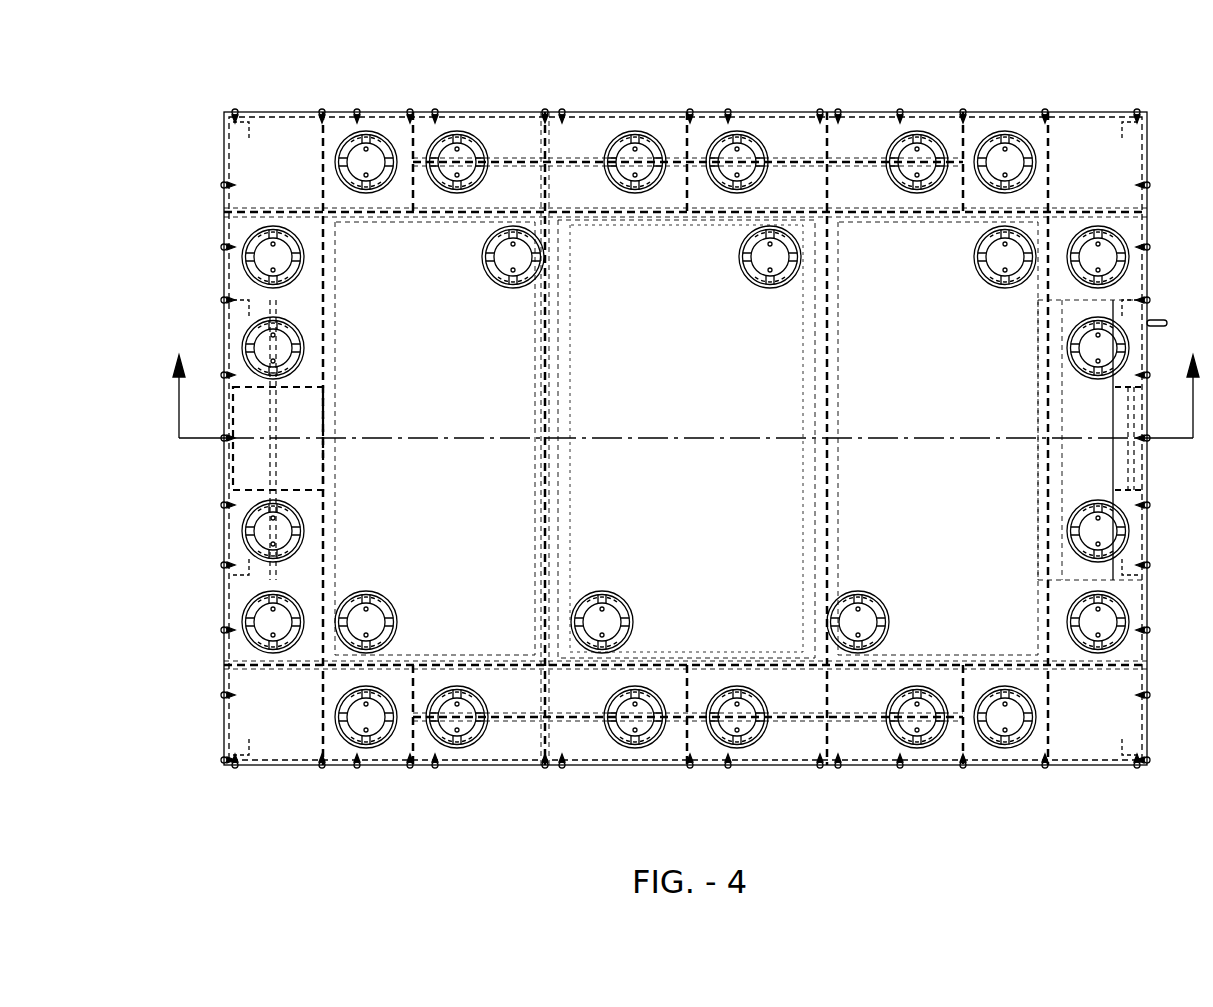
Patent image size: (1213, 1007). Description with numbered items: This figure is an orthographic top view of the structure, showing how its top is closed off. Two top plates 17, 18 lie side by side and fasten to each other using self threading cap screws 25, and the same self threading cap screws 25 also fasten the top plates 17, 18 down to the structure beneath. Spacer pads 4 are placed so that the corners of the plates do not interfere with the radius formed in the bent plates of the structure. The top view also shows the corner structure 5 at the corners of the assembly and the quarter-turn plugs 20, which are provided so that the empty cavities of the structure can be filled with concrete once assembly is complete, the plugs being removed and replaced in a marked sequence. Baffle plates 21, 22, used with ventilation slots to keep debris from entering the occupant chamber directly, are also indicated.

The spacer pad 4 is at (243, 122).
The top plate 17 is at (420, 292).
The top plate 18 is at (700, 292).
The ¼ turn plug 20 is at (926, 122).
The self threading cap screw 25 is at (548, 292).
The baffle plate 21 is at (268, 464).
The baffle plate 22 is at (250, 391).
The corner structure 5 is at (685, 377).